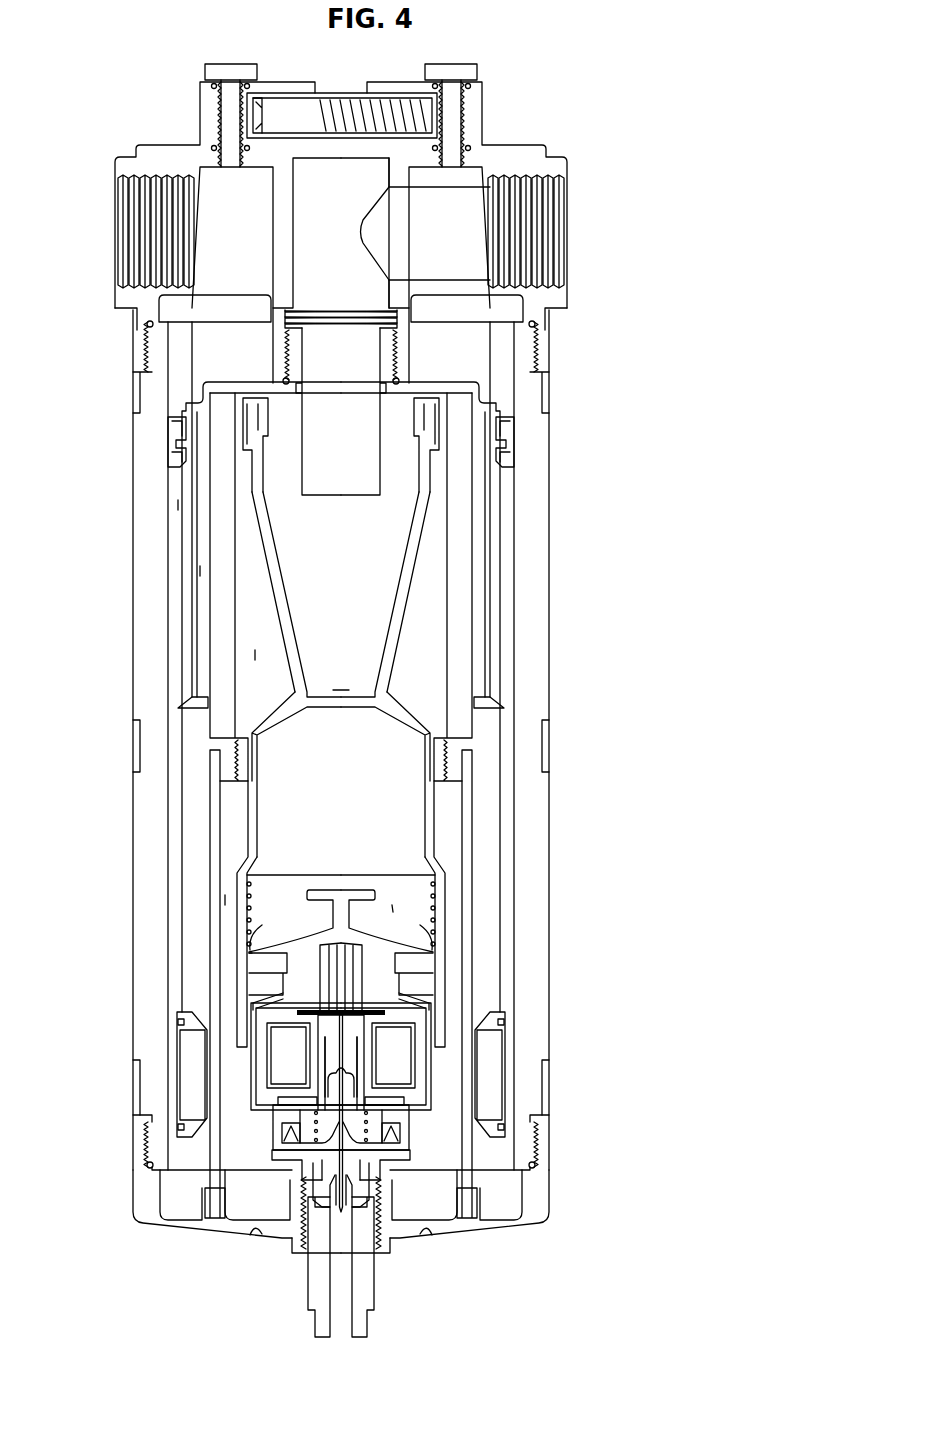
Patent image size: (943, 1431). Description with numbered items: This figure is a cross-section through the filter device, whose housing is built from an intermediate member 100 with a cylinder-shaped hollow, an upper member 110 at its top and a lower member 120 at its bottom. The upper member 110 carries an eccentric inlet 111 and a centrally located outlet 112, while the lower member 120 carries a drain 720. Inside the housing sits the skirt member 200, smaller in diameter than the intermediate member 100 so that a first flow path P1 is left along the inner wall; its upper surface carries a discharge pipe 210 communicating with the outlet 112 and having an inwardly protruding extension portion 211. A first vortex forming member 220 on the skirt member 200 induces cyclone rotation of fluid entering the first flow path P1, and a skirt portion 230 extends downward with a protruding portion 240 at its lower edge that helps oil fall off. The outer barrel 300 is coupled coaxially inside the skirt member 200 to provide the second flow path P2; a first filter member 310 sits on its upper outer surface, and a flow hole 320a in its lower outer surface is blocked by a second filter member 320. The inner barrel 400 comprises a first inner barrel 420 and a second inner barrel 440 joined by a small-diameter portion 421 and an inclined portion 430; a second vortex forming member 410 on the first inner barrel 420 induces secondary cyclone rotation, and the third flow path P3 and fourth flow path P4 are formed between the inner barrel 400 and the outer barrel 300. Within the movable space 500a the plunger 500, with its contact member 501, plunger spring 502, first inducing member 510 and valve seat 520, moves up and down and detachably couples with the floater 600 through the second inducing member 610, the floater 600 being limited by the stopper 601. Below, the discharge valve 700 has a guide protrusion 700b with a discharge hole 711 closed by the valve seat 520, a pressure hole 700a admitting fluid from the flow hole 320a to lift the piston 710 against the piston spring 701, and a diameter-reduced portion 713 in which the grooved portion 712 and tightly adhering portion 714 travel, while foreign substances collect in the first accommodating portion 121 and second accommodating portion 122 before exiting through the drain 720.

The intermediate member 100 is at (132, 541).
The upper member 110 is at (176, 146).
The inlet 111 is at (118, 214).
The outlet 112 is at (565, 214).
The lower member 120 is at (140, 1146).
The first accommodating portion 121 is at (186, 1205).
The second accommodating portion 122 is at (240, 1235).
The skirt member 200 is at (190, 398).
The discharge pipe 210 is at (395, 340).
The extension portion 211 is at (344, 437).
The first vortex forming member 220 is at (166, 436).
The skirt portion 230 is at (190, 484).
The protruding portion 240 is at (183, 705).
The outer barrel 300 is at (211, 861).
The first filter member 310 is at (225, 601).
The second filter member 320 is at (188, 1050).
The flow hole 320a is at (182, 1086).
The inner barrel 400 is at (384, 722).
The second vortex forming member 410 is at (432, 408).
The first inner barrel 420 is at (418, 550).
The small-diameter portion 421 is at (340, 706).
The inclined portion 430 is at (412, 716).
The second inner barrel 440 is at (442, 914).
The plunger 500 is at (425, 945).
The movable space 500a is at (395, 908).
The contact member 501 is at (390, 960).
The plunger spring 502 is at (247, 950).
The first inducing member 510 is at (355, 978).
The valve seat 520 is at (384, 1012).
The floater 600 is at (335, 1049).
The stopper 601 is at (254, 1006).
The second inducing member 610 is at (278, 1048).
The discharge valve 700 is at (358, 1149).
The pressure hole 700a is at (385, 1143).
The guide protrusion 700b is at (362, 1072).
The piston spring 701 is at (348, 1080).
The piston 710 is at (378, 1170).
The discharge hole 711 is at (338, 1018).
The grooved portion 712 is at (310, 1182).
The diameter-reduced portion 713 is at (345, 1210).
The tightly adhering portion 714 is at (333, 1205).
The drain 720 is at (375, 1267).
The first flow path P1 is at (178, 505).
The second flow path P2 is at (200, 572).
The third flow path P3 is at (255, 655).
The fourth flow path P4 is at (225, 900).